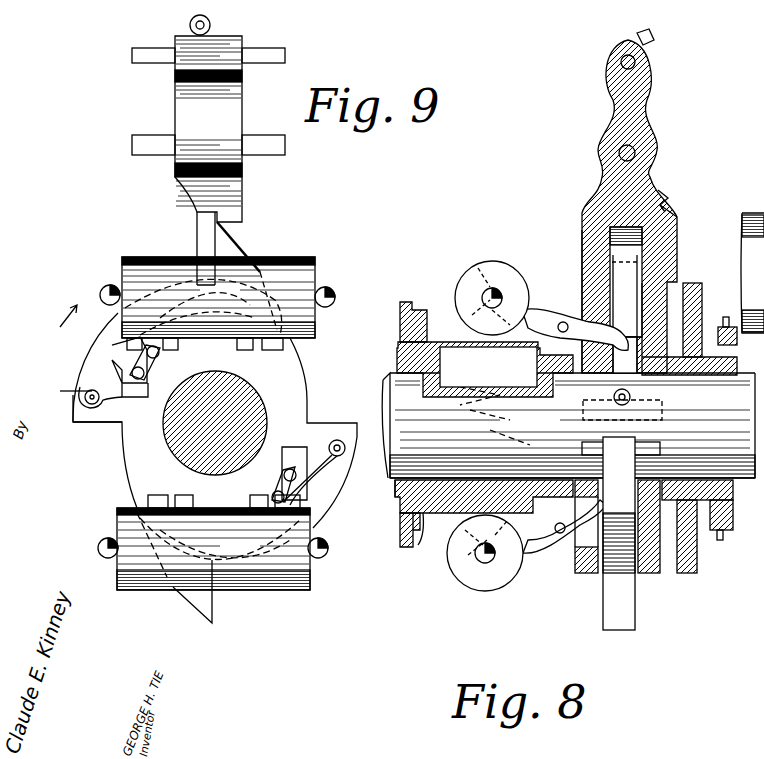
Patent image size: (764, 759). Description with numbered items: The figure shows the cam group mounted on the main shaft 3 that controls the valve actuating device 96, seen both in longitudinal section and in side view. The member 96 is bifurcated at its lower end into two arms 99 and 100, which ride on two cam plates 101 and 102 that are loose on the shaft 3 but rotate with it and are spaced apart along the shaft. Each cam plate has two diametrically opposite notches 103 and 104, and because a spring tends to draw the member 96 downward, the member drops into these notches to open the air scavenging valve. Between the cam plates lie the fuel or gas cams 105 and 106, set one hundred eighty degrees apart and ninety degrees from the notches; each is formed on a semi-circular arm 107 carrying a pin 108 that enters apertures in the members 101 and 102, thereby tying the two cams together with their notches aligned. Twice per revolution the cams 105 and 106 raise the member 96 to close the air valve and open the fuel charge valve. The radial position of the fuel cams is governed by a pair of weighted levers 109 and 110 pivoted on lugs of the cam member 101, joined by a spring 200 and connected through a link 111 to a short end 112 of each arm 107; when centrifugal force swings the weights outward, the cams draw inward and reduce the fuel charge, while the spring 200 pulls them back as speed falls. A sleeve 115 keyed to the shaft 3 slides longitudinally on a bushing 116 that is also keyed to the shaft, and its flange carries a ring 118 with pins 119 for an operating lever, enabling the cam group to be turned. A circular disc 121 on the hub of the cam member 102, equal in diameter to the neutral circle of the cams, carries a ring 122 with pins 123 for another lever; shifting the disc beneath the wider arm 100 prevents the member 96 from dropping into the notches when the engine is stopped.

In FIG. 9, the shaft 3 is at (168, 450).
In FIG. 8, the shaft 3 is at (742, 266).
In FIG. 9, the actuating device 96 is at (208, 118).
In FIG. 8, the actuating device 96 is at (648, 135).
In FIG. 9, the arm 99 is at (197, 222).
In FIG. 8, the arm 99 is at (582, 238).
In FIG. 9, the arm 100 is at (61, 383).
In FIG. 8, the arm 100 is at (652, 243).
In FIG. 9, the cam plate 101 is at (302, 382).
In FIG. 8, the cam plate 101 is at (585, 575).
In FIG. 8, the cam plate 102 is at (652, 575).
In FIG. 9, the notch 103 is at (333, 427).
In FIG. 9, the notch 104 is at (95, 424).
In FIG. 9, the fuel cam 105 is at (245, 247).
In FIG. 8, the fuel cam 105 is at (674, 193).
In FIG. 9, the fuel cam 106 is at (200, 612).
In FIG. 8, the fuel cam 106 is at (635, 628).
In FIG. 9, the semi-circular arm 107 is at (105, 336).
In FIG. 8, the pin 108 is at (660, 448).
In FIG. 8, the weighted lever 109 is at (537, 313).
In FIG. 9, the weighted lever 110 is at (168, 257).
In FIG. 8, the weighted lever 110 is at (488, 426).
In FIG. 9, the link 111 is at (152, 362).
In FIG. 8, the link 111 is at (660, 380).
In FIG. 9, the short end 112 is at (115, 405).
In FIG. 8, the sleeve 115 is at (440, 514).
In FIG. 8, the bushing 116 is at (398, 500).
In FIG. 8, the ring 118 is at (400, 535).
In FIG. 8, the pin 119 is at (408, 302).
In FIG. 8, the circular disc 121 is at (693, 283).
In FIG. 8, the ring 122 is at (725, 540).
In FIG. 8, the pin 123 is at (712, 545).
In FIG. 8, the spring 200 is at (472, 262).